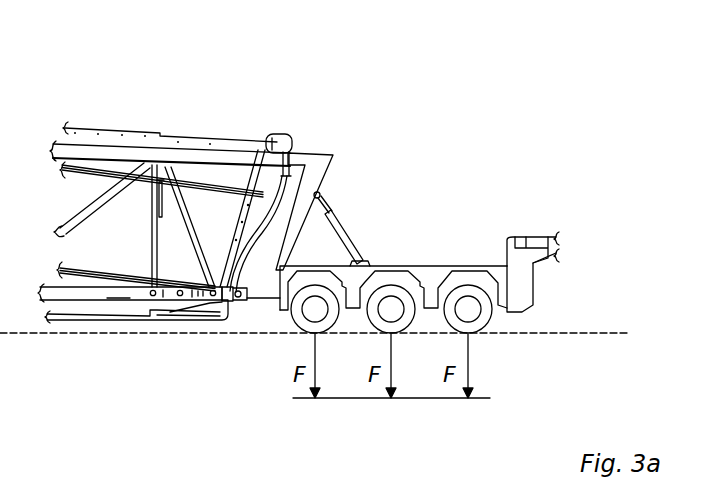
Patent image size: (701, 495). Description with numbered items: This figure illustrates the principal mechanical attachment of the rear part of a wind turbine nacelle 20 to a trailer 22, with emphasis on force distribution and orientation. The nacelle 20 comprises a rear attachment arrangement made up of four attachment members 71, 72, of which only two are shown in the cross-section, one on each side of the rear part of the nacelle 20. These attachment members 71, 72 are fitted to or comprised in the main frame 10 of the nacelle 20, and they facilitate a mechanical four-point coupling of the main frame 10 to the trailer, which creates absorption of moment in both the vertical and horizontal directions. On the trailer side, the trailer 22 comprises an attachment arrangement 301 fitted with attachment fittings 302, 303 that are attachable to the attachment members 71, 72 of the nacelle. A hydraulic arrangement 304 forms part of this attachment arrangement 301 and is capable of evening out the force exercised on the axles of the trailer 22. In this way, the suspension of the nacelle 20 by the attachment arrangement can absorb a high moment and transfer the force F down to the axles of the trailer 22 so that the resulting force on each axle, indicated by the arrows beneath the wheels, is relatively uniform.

The main frame 10 is at (88, 293).
The nacelle 20 is at (108, 127).
The trailer 22 is at (453, 265).
The attachment member 71 is at (267, 136).
The attachment member 72 is at (185, 312).
The attachment arrangement 301 is at (331, 170).
The attachment fitting 302 is at (315, 156).
The attachment fitting 303 is at (236, 298).
The hydraulic arrangement 304 is at (361, 234).